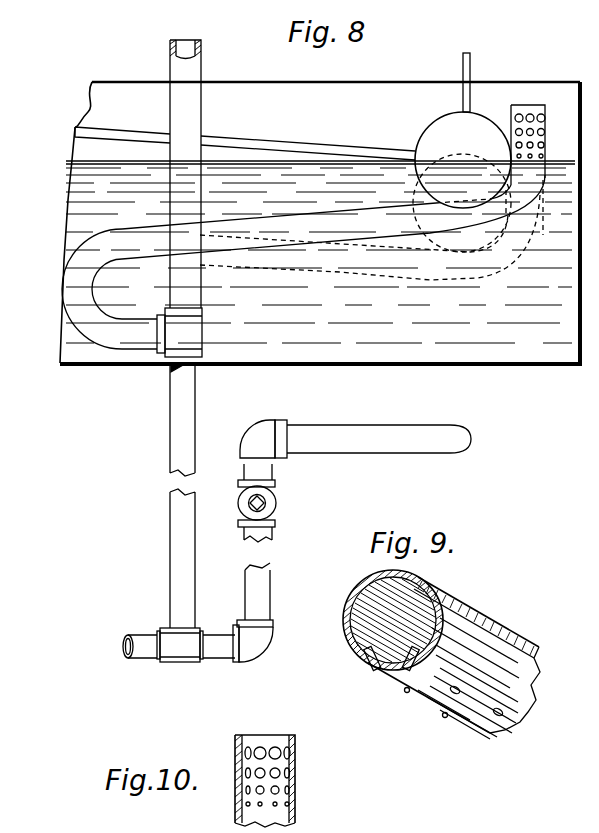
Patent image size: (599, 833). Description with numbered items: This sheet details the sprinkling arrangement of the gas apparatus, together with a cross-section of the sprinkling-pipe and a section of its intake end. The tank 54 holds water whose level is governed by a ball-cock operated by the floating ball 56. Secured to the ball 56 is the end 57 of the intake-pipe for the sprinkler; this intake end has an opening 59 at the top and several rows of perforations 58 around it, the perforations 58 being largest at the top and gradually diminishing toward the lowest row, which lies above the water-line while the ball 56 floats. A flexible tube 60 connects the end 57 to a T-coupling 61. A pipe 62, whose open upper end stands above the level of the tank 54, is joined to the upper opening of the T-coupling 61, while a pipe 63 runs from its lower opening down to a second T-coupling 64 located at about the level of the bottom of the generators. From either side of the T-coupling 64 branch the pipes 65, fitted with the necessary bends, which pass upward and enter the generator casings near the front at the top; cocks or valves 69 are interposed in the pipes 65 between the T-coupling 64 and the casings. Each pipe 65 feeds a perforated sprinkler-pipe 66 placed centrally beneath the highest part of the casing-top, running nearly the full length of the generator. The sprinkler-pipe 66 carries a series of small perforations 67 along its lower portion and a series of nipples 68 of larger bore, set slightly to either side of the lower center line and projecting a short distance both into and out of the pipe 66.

In FIG. 8, the tank 54 is at (321, 223).
In FIG. 8, the ball 56 is at (293, 152).
In FIG. 8, the end of the intake-pipe 57 is at (546, 120).
In FIG. 10, the end of the intake-pipe 57 is at (296, 768).
In FIG. 8, the perforations 58 is at (546, 140).
In FIG. 10, the perforations 58 is at (278, 776).
In FIG. 10, the opening 59 is at (272, 733).
In FIG. 8, the flexible tube 60 is at (50, 316).
In FIG. 8, the T-coupling 61 is at (179, 332).
In FIG. 8, the pipe 62 is at (198, 72).
In FIG. 8, the pipe 63 is at (196, 404).
In FIG. 8, the T-coupling 64 is at (180, 645).
In FIG. 8, the pipes 65 is at (345, 455).
In FIG. 9, the perforated sprinkler-pipe 66 is at (496, 620).
In FIG. 9, the perforations 67 is at (395, 677).
In FIG. 9, the nipples 68 is at (456, 685).
In FIG. 8, the cocks or valves 69 is at (277, 502).